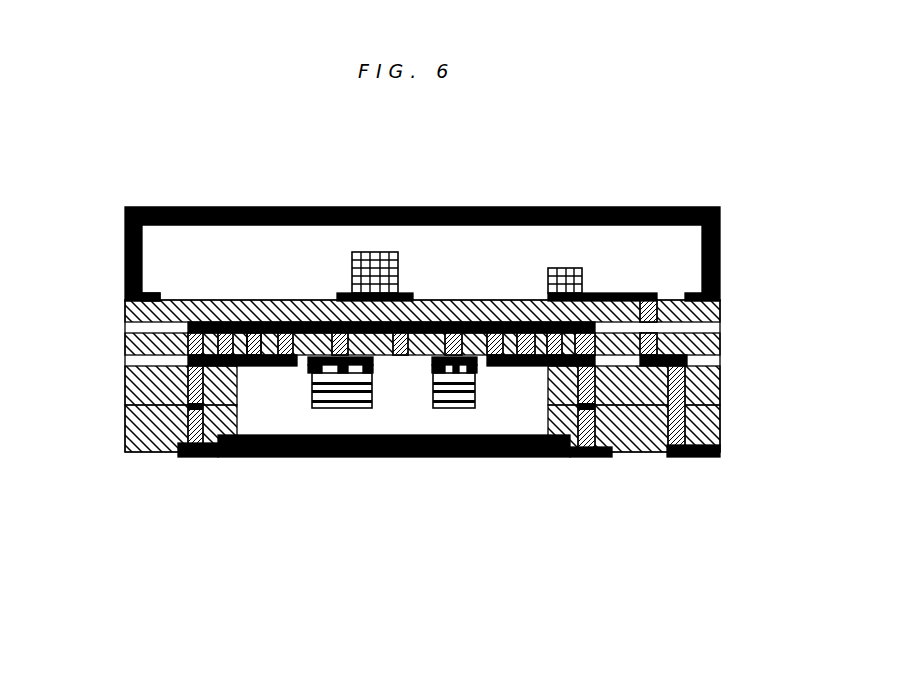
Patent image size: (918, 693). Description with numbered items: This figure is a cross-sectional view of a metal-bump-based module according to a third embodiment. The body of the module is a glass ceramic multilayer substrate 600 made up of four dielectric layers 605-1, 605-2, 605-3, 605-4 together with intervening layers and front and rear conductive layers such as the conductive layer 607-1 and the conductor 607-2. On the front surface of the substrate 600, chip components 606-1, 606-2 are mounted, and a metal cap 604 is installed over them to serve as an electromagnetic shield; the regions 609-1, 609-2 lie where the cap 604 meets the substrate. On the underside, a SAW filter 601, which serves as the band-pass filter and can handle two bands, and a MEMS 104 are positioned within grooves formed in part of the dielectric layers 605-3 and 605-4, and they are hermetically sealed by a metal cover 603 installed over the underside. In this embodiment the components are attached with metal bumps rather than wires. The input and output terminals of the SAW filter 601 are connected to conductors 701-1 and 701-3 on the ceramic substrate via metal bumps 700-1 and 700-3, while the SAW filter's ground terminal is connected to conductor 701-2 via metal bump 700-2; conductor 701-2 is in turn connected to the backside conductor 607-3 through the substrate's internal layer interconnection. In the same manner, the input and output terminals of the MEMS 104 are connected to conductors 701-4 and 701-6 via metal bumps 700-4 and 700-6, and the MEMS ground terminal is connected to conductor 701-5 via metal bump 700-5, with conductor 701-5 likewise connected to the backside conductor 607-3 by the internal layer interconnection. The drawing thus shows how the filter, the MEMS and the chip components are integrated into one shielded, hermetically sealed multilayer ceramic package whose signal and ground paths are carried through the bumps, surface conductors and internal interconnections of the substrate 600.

The glass ceramic multilayer substrate 600 is at (105, 453).
The metal cap 604 is at (175, 207).
The dielectric layer 605-1 is at (722, 310).
The dielectric layer 605-2 is at (708, 343).
The dielectric layer 605-3 is at (720, 387).
The dielectric layer 605-4 is at (718, 425).
The chip component 606-1 is at (369, 252).
The chip component 606-2 is at (582, 282).
The conductive layer 607-1 is at (587, 458).
The conductor 607-2 is at (165, 452).
The backside conductor 607-3 is at (260, 322).
The first seal / bonding portion 609-1 is at (222, 320).
The second seal / bonding portion 609-2 is at (646, 457).
The conductor 701-1 is at (300, 300).
The conductor 701-2 is at (332, 300).
The conductor 701-3 is at (422, 300).
The conductor 701-4 is at (440, 300).
The conductor 701-5 is at (478, 300).
The conductor 701-6 is at (508, 300).
The metal bump 700-1 is at (310, 365).
The metal bump 700-2 is at (345, 373).
The metal bump 700-3 is at (375, 374).
The metal bump 700-4 is at (432, 365).
The metal bump 700-5 is at (453, 373).
The metal bump 700-6 is at (485, 365).
The SAW filter 601 is at (348, 408).
The MEMS 104 is at (437, 408).
The metal cover 603 is at (547, 458).